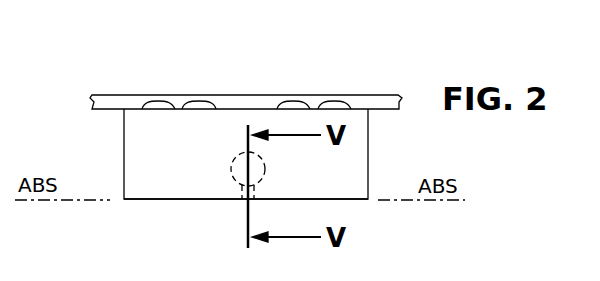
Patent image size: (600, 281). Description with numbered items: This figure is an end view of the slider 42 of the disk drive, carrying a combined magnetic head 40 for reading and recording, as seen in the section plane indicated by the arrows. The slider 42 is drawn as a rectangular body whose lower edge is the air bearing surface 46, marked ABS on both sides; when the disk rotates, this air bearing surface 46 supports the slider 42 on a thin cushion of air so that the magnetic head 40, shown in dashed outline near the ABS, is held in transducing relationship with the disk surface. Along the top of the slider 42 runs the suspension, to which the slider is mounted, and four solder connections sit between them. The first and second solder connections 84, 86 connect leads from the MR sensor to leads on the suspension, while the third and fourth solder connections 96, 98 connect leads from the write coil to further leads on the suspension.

The slider 42 is at (123, 142).
The air bearing surface 46 is at (150, 199).
The combined magnetic head 40 is at (230, 179).
The first solder connection 84 is at (157, 101).
The third solder connection 96 is at (198, 101).
The fourth solder connection 98 is at (292, 101).
The second solder connection 86 is at (335, 101).